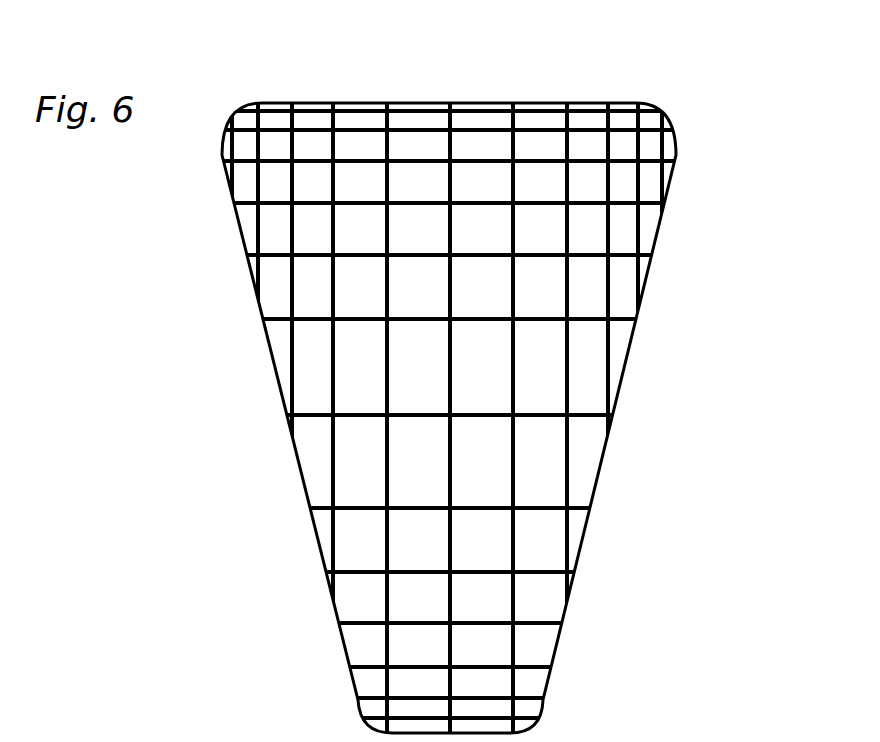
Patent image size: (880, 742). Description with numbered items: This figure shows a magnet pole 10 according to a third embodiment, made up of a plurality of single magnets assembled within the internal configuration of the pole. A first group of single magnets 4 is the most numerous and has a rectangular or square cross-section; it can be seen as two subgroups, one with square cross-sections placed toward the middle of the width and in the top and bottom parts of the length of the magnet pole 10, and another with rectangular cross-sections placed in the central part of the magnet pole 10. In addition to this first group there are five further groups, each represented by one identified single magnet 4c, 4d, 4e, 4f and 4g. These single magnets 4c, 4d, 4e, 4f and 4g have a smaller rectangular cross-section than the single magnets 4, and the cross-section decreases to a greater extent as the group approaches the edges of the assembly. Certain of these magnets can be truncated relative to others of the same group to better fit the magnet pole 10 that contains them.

The magnet pole 10 is at (281, 103).
The single magnets of the first group 4 is at (487, 187).
The single magnet of a second group 4c is at (536, 181).
The single magnet of a second group 4d is at (588, 183).
The single magnet of a second group 4e is at (621, 181).
The single magnet of a second group 4f is at (652, 146).
The single magnet of a second group 4g is at (672, 183).